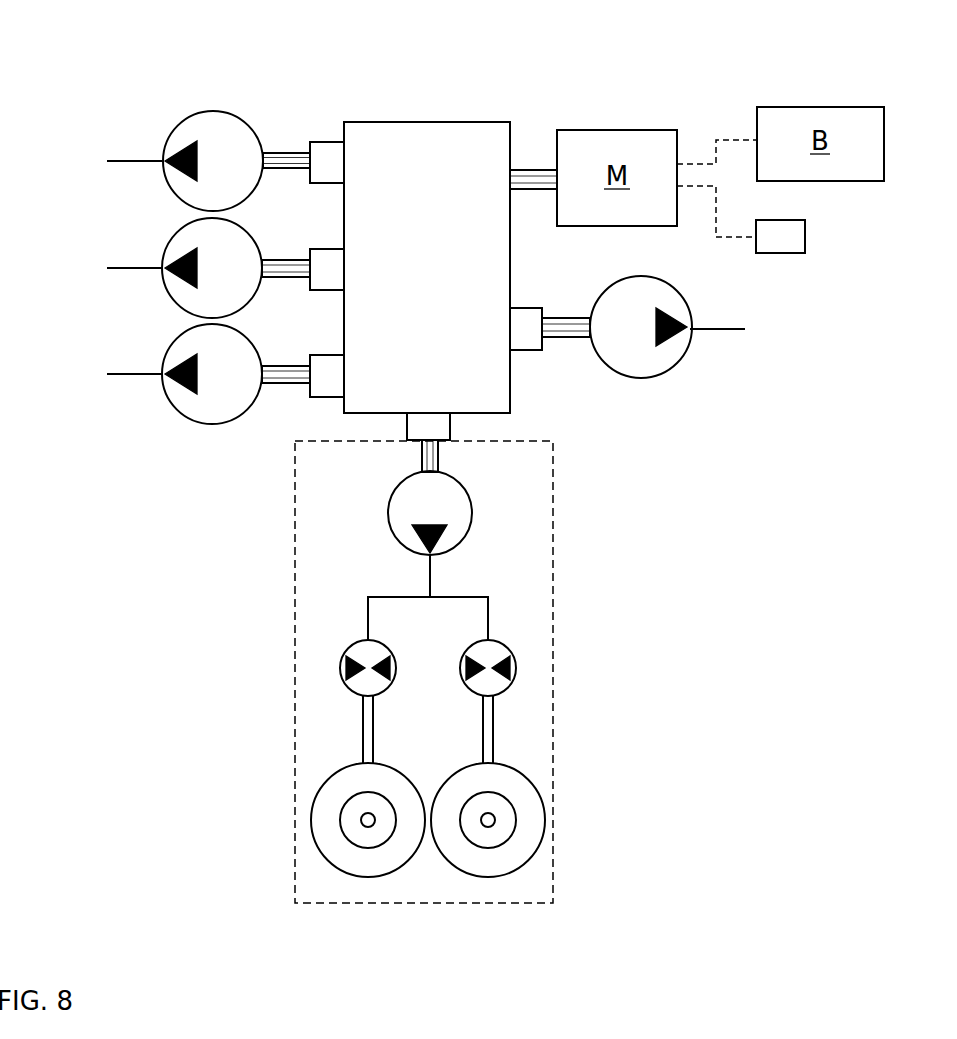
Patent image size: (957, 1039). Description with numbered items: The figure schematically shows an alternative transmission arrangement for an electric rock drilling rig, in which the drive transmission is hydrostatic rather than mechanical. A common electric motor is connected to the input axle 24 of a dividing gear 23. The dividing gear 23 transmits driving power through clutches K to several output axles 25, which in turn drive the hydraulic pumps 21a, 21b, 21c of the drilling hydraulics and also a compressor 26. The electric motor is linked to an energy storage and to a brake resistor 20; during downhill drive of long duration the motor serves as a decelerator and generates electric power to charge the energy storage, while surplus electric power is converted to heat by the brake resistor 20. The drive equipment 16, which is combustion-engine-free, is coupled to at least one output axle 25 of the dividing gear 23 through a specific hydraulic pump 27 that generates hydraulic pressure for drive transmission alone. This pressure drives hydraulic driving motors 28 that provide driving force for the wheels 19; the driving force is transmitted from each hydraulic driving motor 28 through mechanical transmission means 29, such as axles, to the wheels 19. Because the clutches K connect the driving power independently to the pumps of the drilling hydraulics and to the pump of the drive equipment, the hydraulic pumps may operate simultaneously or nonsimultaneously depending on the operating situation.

The drive equipment 16 is at (437, 903).
The wheels 19 is at (337, 850).
The brake resistor 20 is at (776, 238).
The hydraulic pump 21a is at (188, 128).
The hydraulic pump 21b is at (183, 243).
The hydraulic pump 21c is at (178, 356).
The dividing gear 23 is at (413, 268).
The input axle 24 is at (529, 158).
The output axle 25 is at (268, 137).
The compressor 26 is at (638, 355).
The hydraulic pump 27 is at (460, 517).
The hydraulic driving motor 28 is at (340, 663).
The mechanical transmission means 29 is at (363, 718).
The clutches K is at (325, 142).